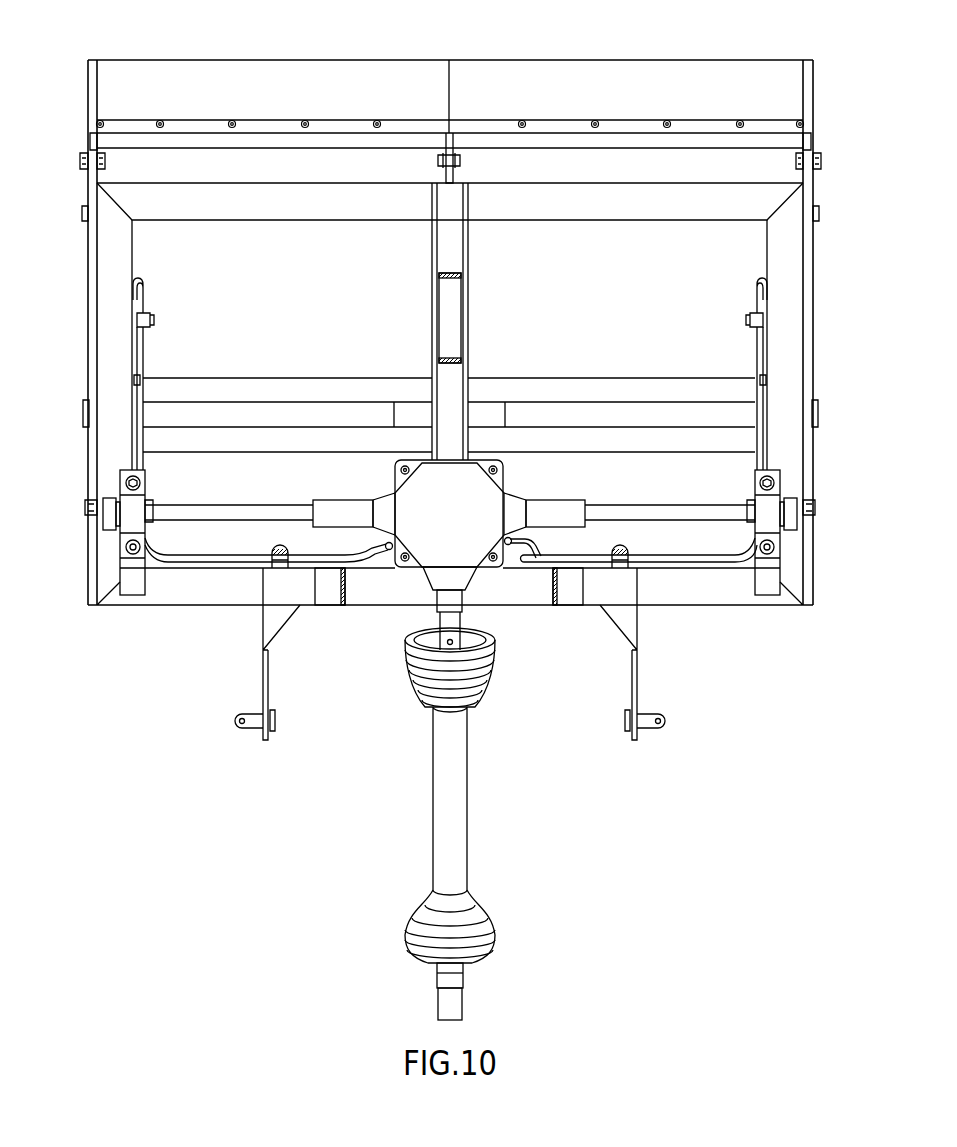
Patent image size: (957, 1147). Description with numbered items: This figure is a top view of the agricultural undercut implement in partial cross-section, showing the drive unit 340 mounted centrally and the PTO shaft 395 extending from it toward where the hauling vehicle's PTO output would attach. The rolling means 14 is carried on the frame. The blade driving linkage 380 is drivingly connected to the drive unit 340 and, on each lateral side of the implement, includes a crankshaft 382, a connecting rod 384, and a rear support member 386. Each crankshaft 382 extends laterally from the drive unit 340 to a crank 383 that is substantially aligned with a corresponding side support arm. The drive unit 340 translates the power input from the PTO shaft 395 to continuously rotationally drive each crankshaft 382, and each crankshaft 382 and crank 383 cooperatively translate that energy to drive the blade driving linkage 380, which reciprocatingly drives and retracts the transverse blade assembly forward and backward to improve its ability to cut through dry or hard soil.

The ground-engaging rolling means 14 is at (541, 351).
The drive unit 340 is at (490, 496).
The blade driving linkage 380 is at (85, 329).
The crankshaft 382 is at (232, 506).
The crank 383 is at (100, 520).
The connecting rod 384 is at (89, 286).
The rear support member 386 is at (86, 158).
The PTO shaft 395 is at (432, 792).